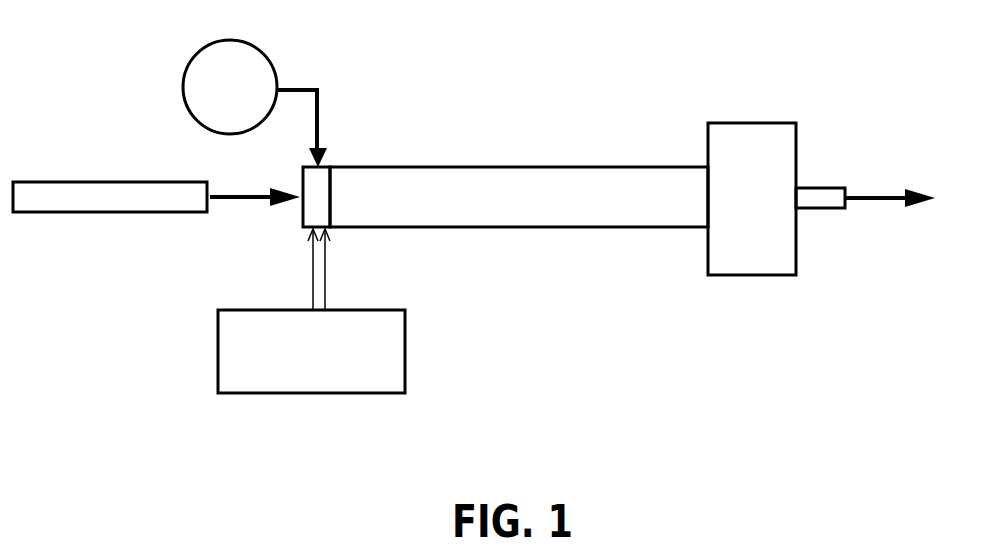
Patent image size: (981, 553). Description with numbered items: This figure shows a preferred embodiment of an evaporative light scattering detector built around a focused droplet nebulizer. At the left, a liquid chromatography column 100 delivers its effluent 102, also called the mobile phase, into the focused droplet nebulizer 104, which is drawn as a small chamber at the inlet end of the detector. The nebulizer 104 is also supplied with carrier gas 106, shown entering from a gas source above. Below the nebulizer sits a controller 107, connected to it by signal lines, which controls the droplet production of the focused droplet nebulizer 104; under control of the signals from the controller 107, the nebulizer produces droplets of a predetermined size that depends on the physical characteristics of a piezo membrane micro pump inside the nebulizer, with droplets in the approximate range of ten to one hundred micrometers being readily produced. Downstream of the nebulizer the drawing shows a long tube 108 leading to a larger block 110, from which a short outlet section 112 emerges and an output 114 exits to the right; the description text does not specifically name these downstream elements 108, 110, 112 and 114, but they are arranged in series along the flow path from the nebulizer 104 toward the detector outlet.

The liquid chromatography column 100 is at (120, 199).
The effluent 102 is at (238, 200).
The focused droplet nebulizer 104 is at (320, 190).
The carrier gas 106 is at (300, 85).
The controller 107 is at (305, 360).
The hollow fiber / waveguide 108 is at (554, 210).
The output coupler housing 110 is at (740, 246).
The output window 112 is at (822, 197).
The output beam 114 is at (876, 205).